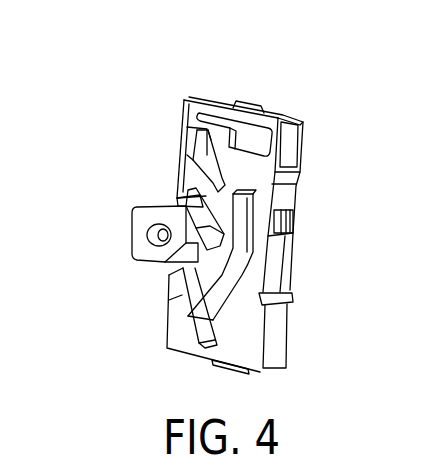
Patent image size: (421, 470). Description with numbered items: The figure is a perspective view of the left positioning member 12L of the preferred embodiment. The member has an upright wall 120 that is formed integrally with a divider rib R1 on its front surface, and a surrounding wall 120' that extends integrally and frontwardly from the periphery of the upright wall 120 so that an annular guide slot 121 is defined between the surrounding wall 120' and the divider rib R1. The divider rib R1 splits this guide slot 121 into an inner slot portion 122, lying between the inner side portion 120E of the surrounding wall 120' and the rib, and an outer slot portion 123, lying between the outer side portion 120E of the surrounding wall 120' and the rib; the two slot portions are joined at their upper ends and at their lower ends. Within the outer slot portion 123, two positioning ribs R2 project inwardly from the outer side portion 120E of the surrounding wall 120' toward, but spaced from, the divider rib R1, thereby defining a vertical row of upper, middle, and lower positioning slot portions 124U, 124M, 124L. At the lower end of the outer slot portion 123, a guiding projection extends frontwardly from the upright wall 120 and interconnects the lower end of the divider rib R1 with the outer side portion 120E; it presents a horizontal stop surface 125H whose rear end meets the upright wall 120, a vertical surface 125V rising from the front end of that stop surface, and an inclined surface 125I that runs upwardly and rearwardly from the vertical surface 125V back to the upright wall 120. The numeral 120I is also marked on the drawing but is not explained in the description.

The left positioning member 12L is at (326, 100).
The upright wall 120 is at (252, 101).
The side portion of the surrounding wall 120E is at (184, 164).
The inner portion of base plate 120I is at (280, 251).
The surrounding wall 120' is at (168, 239).
The annular guide slot 121 is at (247, 162).
The inner slot portion 122 is at (263, 239).
The outer slot portion 123 is at (192, 206).
The upper positioning slot portion 124U is at (198, 134).
The middle positioning slot portion 124M is at (186, 185).
The lower positioning slot portion 124L is at (188, 258).
The inclined surface 125I is at (182, 275).
The vertical surface 125V is at (200, 299).
The horizontal stop surface 125H is at (170, 332).
The divider rib R1 is at (237, 200).
The positioning rib R2 is at (230, 158).